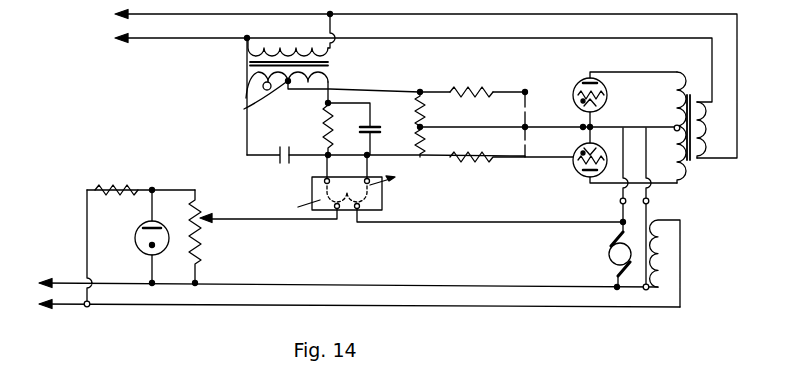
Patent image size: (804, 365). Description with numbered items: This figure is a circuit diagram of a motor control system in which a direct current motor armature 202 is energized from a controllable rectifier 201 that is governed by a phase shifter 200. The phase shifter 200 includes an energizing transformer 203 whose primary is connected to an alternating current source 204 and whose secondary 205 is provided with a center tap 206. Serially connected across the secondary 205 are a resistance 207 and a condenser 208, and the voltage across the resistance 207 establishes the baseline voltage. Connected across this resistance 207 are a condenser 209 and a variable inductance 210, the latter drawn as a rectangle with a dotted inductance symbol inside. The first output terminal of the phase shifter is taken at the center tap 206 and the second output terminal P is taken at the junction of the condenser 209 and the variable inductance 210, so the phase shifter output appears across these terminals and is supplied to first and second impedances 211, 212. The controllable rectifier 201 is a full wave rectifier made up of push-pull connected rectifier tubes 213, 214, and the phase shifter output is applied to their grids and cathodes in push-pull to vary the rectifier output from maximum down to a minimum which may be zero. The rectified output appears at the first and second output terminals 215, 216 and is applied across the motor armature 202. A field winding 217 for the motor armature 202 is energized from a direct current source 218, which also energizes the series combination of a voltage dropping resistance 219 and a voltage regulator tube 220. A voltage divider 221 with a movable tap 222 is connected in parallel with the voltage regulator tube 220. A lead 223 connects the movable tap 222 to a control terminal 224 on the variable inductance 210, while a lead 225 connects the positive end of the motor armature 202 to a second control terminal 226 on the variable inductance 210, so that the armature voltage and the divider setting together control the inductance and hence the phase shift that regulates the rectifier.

The phase shifter 200 is at (273, 114).
The controllable rectifier 201 is at (621, 111).
The direct current motor armature 202 is at (609, 256).
The energizing transformer 203 is at (330, 62).
The alternating current source 204 is at (409, 84).
The secondary 205 is at (246, 92).
The center tap 206 is at (246, 108).
The resistance 207 is at (324, 131).
The condenser 208 is at (271, 168).
The condenser 209 is at (377, 130).
The variable inductance 210 is at (383, 190).
The first impedance 211 is at (424, 108).
The second impedance 212 is at (424, 140).
The rectifier tube 213 is at (581, 80).
The rectifier tube 214 is at (580, 172).
The first output terminal 215 is at (620, 201).
The second output terminal 216 is at (650, 201).
The field winding 217 is at (666, 252).
The direct current source 218 is at (42, 294).
The voltage dropping resistance 219 is at (126, 186).
The voltage regulator tube 220 is at (142, 251).
The voltage divider 221 is at (201, 246).
The movable tap 222 is at (204, 216).
The lead 223 is at (288, 222).
The control terminal 224 is at (337, 212).
The lead 225 is at (487, 222).
The second control terminal 226 is at (357, 212).
The second output terminal P is at (370, 157).